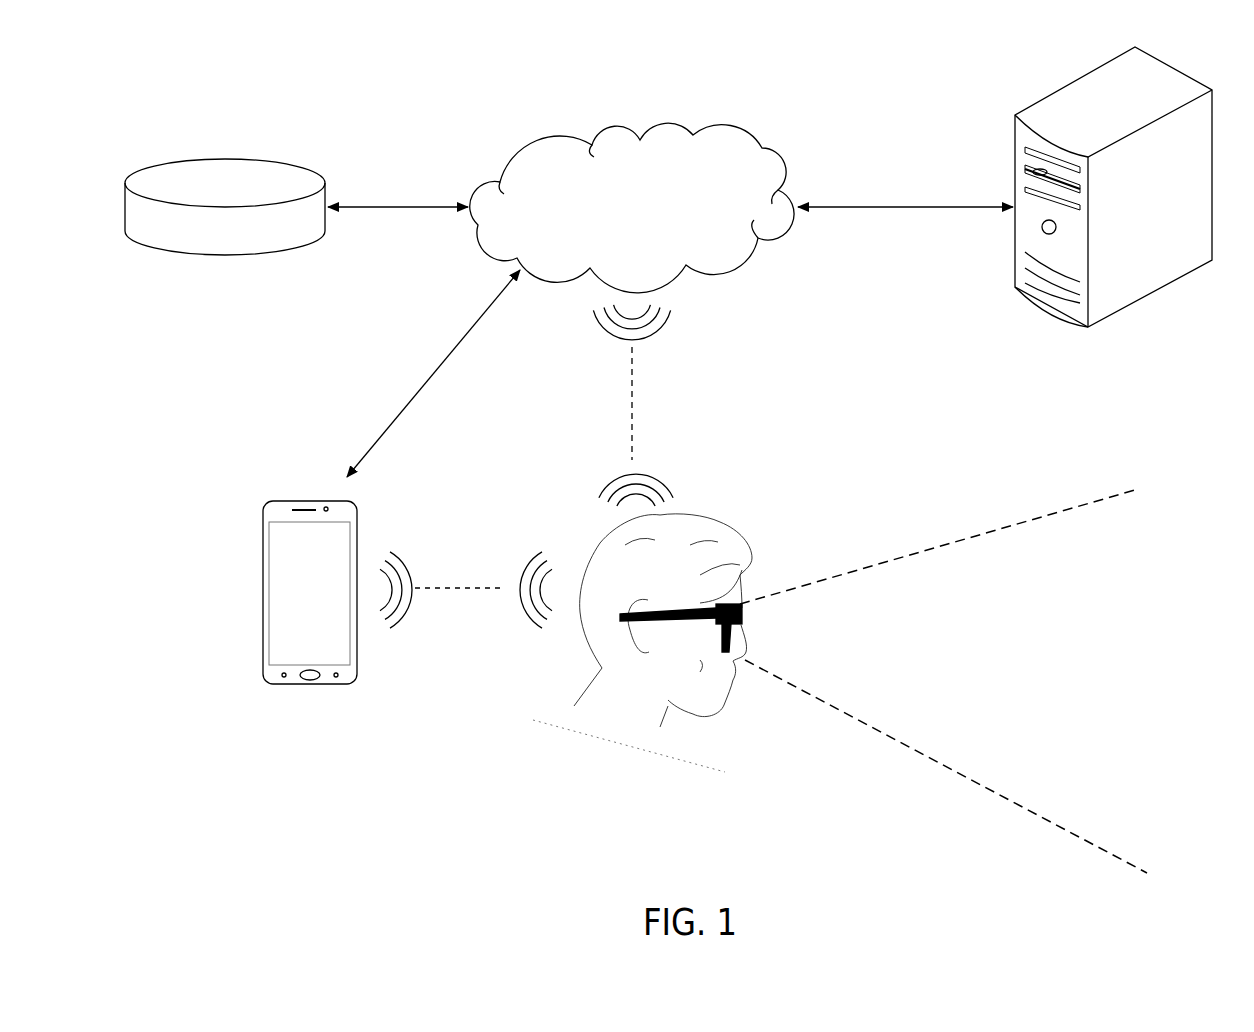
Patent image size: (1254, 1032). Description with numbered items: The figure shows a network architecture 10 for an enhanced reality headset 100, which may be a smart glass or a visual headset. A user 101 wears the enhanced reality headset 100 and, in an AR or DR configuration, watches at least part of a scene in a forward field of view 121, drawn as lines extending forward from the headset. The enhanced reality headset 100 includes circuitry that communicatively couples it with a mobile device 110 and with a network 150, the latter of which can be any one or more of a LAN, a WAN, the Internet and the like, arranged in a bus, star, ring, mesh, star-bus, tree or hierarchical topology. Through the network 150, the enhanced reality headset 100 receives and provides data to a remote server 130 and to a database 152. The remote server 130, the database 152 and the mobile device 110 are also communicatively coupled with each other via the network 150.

The network architecture 10 is at (316, 51).
The enhanced reality headset 100 is at (742, 602).
The user 101 is at (613, 723).
The mobile device 110 is at (312, 591).
The forward field of view 121 is at (1000, 687).
The remote server 130 is at (1180, 232).
The network 150 is at (670, 224).
The database 152 is at (253, 198).